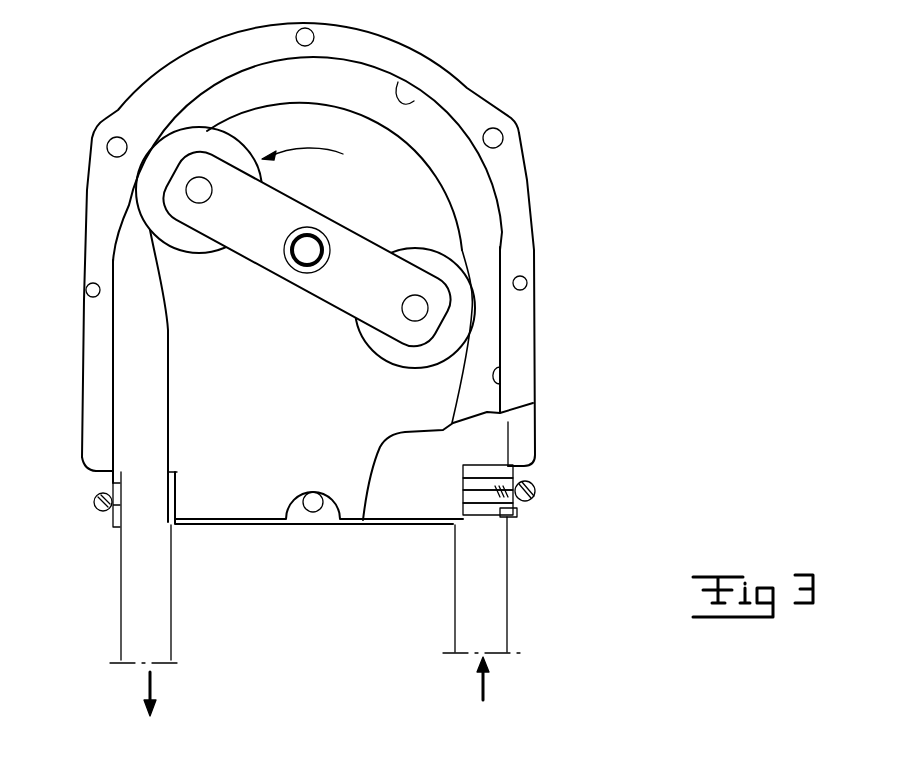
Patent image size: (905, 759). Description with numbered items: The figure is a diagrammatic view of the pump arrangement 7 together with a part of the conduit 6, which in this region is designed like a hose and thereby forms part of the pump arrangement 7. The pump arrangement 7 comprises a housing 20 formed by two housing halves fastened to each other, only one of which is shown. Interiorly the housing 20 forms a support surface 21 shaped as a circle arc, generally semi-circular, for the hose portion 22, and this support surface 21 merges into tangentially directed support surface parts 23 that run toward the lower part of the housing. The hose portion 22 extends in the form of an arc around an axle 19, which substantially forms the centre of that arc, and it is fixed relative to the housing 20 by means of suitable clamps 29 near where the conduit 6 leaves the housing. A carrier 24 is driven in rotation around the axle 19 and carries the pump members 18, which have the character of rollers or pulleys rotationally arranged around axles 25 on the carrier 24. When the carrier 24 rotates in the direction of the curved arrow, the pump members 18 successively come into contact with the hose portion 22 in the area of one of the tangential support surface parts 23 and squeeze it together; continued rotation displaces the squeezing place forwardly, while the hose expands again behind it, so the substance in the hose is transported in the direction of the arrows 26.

The conduit 6 is at (490, 592).
The pump arrangement 7 is at (556, 233).
The pump members 18 is at (178, 250).
The axle 19 is at (303, 263).
The housing 20 is at (509, 178).
The support surface 21 is at (413, 100).
The hose portion 22 is at (363, 97).
The tangentially directed support surface parts 23 is at (118, 403).
The carrier 24 is at (348, 245).
The axles 25 is at (404, 306).
The arrows 26 is at (158, 688).
The clamps 29 is at (538, 492).